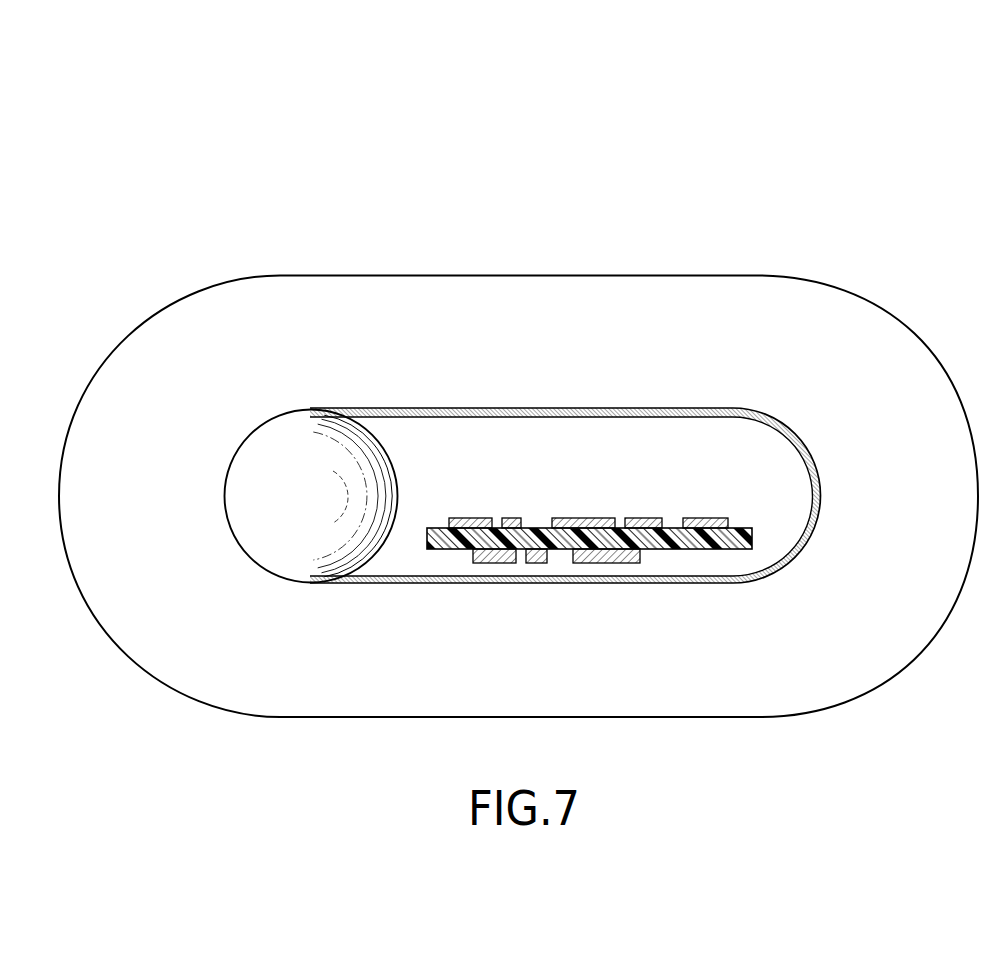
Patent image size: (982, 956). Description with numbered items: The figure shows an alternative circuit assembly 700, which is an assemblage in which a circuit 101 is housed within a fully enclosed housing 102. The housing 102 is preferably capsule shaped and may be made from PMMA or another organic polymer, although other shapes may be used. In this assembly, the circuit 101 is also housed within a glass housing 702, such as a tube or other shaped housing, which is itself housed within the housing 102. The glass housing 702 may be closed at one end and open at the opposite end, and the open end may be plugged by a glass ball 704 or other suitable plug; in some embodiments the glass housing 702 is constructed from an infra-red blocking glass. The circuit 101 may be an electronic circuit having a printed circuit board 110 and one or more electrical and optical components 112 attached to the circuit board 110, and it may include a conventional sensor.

The circuit assembly 700 is at (224, 115).
The housing 102 is at (768, 277).
The glass housing 702 is at (718, 408).
The glass ball 704 is at (246, 494).
The circuit 101 is at (577, 490).
The printed circuit board 110 is at (745, 527).
The electrical and optical components 112 is at (578, 518).